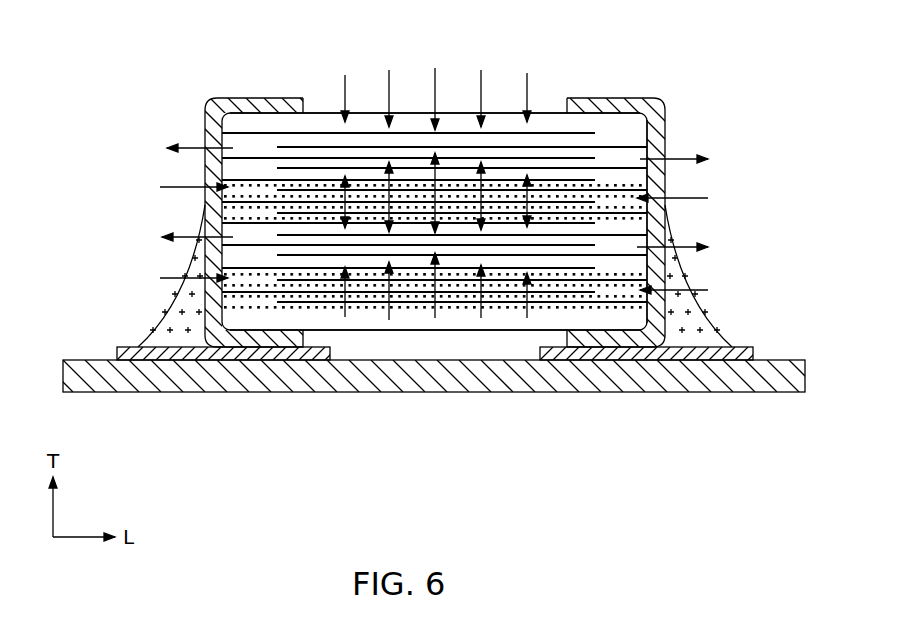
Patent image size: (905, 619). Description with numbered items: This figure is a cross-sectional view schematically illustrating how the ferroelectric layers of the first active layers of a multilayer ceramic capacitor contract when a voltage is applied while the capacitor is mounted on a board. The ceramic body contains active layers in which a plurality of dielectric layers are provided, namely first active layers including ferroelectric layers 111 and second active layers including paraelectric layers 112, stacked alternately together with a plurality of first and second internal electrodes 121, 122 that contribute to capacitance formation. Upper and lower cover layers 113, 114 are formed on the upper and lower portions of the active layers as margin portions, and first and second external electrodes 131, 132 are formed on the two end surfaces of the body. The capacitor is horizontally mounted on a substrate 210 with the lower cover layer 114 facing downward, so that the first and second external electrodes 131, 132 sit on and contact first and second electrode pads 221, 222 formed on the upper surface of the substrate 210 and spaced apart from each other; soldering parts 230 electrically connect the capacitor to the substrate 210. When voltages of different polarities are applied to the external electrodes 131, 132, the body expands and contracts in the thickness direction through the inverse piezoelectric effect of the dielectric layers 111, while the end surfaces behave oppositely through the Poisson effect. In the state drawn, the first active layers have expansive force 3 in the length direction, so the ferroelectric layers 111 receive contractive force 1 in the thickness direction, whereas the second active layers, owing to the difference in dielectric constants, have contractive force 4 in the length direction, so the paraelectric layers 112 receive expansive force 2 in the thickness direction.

The contractive force in the thickness direction 1 is at (343, 86).
The expansive force in the thickness direction 2 is at (347, 196).
The expansive force in the length direction 3 is at (173, 235).
The contractive force in the length direction 4 is at (183, 272).
The ferroelectric layer 111 is at (405, 135).
The paraelectric layer 112 is at (650, 217).
The upper cover layer 113 is at (457, 123).
The lower cover layer 114 is at (415, 330).
The first internal electrode 121 is at (308, 137).
The second internal electrode 122 is at (545, 140).
The first external electrode 131 is at (237, 102).
The second external electrode 132 is at (613, 98).
The substrate 210 is at (742, 393).
The first electrode pad 221 is at (125, 348).
The second electrode pad 222 is at (742, 348).
The soldering part 230 is at (178, 290).